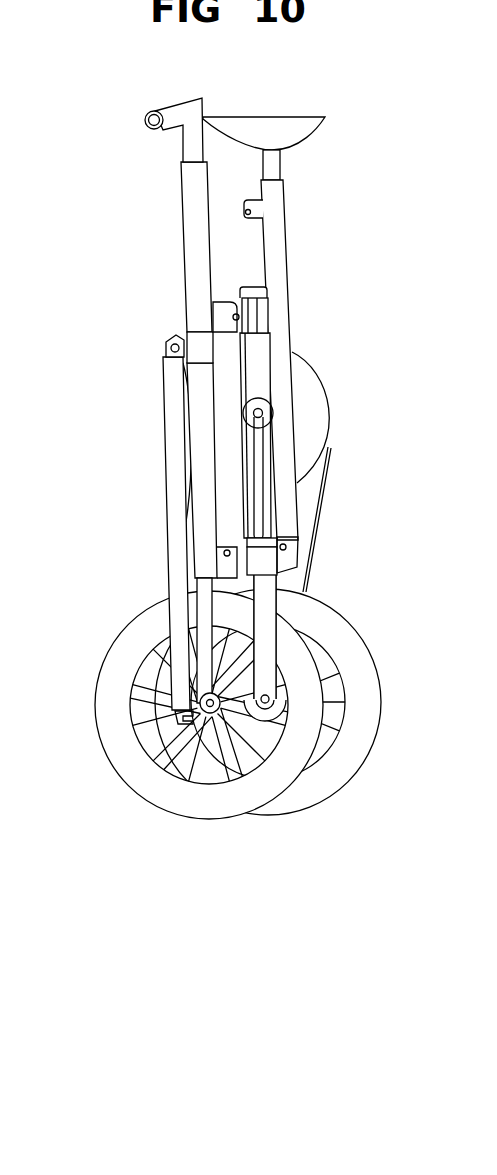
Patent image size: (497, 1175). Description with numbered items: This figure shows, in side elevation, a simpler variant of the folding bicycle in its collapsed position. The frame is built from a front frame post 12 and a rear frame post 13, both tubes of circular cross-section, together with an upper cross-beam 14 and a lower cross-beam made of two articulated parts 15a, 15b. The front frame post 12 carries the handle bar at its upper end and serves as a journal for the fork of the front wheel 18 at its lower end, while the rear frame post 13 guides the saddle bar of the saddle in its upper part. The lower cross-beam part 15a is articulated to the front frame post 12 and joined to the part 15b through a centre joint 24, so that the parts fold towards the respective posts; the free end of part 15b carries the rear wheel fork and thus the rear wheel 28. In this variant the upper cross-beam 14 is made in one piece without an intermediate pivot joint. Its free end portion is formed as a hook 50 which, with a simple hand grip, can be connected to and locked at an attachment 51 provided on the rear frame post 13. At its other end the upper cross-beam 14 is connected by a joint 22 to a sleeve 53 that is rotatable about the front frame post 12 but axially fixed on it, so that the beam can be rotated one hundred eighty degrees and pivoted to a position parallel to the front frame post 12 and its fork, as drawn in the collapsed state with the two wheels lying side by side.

The front frame post 12 is at (192, 226).
The rear frame post 13 is at (275, 267).
The upper cross-beam 14 is at (177, 525).
The part of the lower cross-beam 15a is at (228, 443).
The part of the lower cross-beam 15b is at (267, 445).
The front wheel 18 is at (110, 652).
The joint 22 is at (168, 345).
The centre joint 24 is at (255, 328).
The rear wheel 28 is at (342, 638).
The hook 50 is at (191, 715).
The attachment 51 is at (253, 212).
The sleeve 53 is at (200, 345).